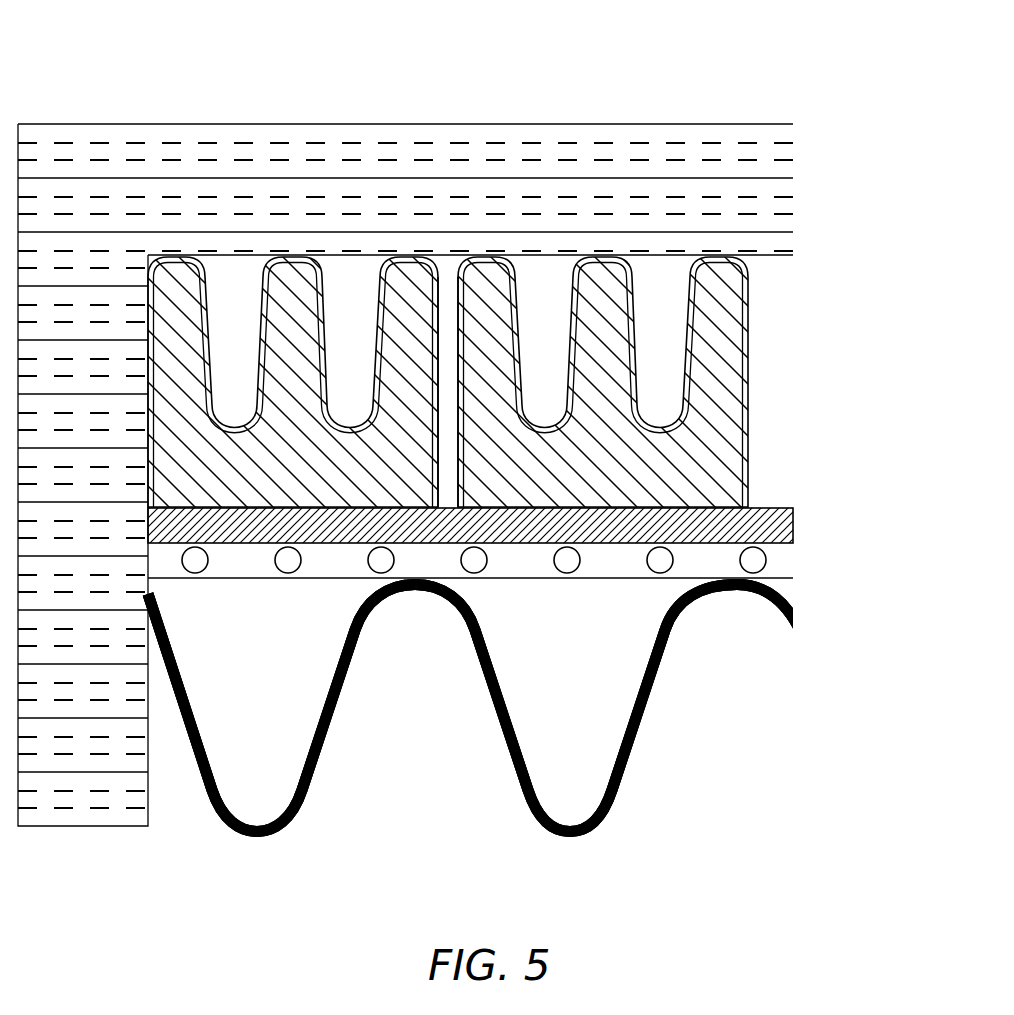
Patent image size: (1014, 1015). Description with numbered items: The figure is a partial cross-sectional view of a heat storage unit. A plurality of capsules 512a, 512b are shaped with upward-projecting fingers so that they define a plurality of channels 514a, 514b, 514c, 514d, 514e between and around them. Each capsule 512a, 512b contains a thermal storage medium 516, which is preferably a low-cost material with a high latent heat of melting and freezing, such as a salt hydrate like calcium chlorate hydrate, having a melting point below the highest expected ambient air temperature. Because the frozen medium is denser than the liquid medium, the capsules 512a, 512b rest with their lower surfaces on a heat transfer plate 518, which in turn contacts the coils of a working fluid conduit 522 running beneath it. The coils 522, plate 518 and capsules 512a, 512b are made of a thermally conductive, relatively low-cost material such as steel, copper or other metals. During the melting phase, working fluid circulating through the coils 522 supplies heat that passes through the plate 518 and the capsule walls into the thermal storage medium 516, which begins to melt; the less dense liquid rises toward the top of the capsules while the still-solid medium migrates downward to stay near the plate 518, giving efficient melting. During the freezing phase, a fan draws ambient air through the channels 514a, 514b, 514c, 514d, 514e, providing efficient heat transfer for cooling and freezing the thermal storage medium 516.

The capsule 512a is at (432, 450).
The capsule 512b is at (748, 443).
The channel 514a is at (217, 337).
The channel 514b is at (352, 307).
The channel 514c is at (451, 270).
The channel 514d is at (545, 315).
The channel 514e is at (668, 323).
The thermal storage medium 516 is at (258, 480).
The heat transfer plate 518 is at (793, 528).
The working fluid conduit 522 is at (203, 568).